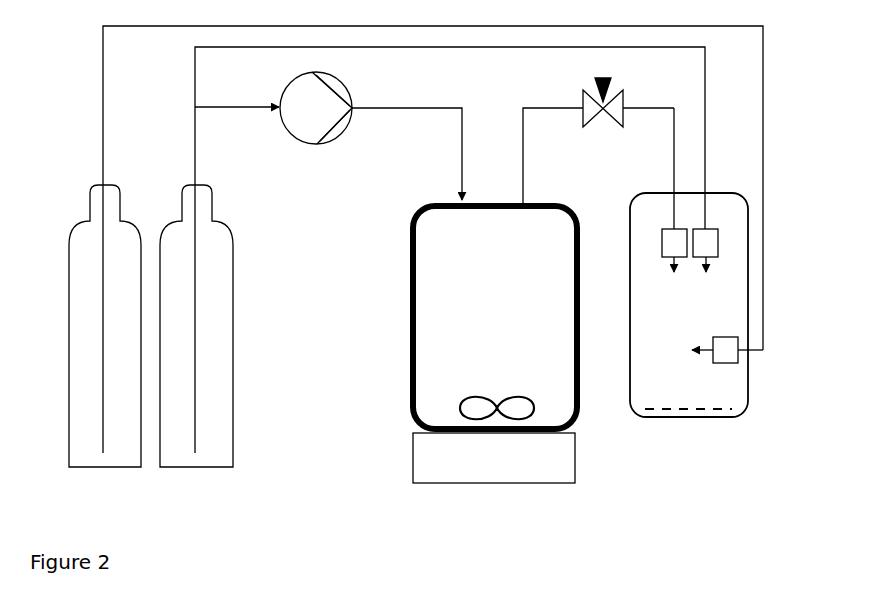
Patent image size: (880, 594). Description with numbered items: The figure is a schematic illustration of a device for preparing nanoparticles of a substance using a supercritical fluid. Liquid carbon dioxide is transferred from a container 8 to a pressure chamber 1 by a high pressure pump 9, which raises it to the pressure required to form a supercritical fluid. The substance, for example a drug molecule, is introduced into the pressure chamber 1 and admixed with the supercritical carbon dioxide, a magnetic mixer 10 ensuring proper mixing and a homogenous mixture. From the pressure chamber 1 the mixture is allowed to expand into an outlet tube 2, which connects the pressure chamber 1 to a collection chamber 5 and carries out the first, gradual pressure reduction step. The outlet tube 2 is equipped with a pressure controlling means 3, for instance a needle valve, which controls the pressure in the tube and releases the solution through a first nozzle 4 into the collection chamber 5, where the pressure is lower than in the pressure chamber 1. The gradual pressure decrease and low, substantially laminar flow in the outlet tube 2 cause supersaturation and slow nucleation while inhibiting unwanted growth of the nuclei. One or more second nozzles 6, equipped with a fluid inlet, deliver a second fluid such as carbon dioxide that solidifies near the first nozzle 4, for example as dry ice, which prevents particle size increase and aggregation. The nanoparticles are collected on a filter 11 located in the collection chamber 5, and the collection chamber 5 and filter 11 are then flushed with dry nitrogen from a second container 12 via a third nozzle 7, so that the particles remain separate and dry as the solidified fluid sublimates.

The pressure chamber 1 is at (495, 317).
The outlet tube 2 is at (553, 157).
The pressure controlling means 3 is at (628, 111).
The first nozzle 4 is at (674, 250).
The collection chamber 5 is at (689, 305).
The second nozzle 6 is at (705, 250).
The third nozzle 7 is at (727, 350).
The container 8 is at (196, 326).
The high pressure pump 9 is at (316, 122).
The magnetic mixer 10 is at (494, 458).
The filter 11 is at (688, 395).
The second container 12 is at (105, 326).